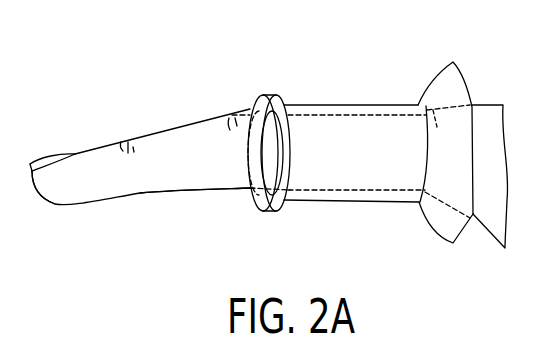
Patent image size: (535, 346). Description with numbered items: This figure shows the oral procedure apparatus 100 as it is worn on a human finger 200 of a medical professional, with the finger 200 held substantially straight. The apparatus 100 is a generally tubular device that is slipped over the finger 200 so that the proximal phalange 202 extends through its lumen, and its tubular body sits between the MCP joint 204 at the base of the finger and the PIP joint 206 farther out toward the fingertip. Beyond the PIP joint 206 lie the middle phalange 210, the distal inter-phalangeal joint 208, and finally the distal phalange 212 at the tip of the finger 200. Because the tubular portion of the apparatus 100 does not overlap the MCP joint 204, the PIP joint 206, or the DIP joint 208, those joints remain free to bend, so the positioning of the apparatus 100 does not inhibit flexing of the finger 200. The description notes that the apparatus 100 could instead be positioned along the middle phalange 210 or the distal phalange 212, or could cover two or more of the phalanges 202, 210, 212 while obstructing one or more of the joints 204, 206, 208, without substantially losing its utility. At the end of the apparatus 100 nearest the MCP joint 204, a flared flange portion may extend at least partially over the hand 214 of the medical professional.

The oral procedure apparatus 100 is at (350, 86).
The human finger 200 is at (177, 128).
The proximal phalange 202 is at (353, 168).
The MCP joint 204 is at (433, 110).
The PIP joint 206 is at (233, 116).
The distal inter-phalangeal (DIP) joint 208 is at (128, 140).
The middle phalange 210 is at (199, 185).
The distal phalange 212 is at (86, 190).
The hand 214 is at (487, 218).